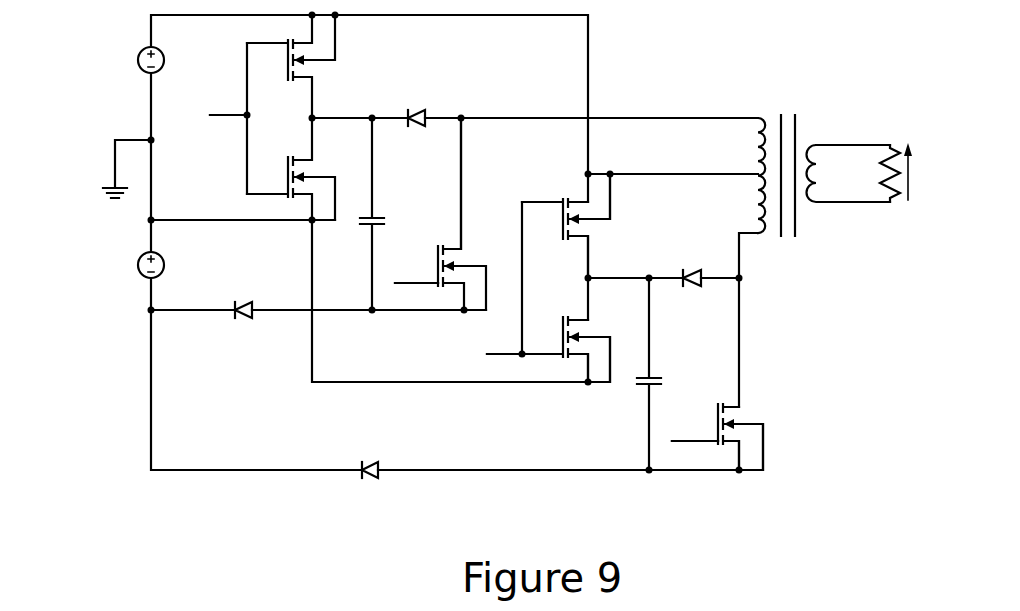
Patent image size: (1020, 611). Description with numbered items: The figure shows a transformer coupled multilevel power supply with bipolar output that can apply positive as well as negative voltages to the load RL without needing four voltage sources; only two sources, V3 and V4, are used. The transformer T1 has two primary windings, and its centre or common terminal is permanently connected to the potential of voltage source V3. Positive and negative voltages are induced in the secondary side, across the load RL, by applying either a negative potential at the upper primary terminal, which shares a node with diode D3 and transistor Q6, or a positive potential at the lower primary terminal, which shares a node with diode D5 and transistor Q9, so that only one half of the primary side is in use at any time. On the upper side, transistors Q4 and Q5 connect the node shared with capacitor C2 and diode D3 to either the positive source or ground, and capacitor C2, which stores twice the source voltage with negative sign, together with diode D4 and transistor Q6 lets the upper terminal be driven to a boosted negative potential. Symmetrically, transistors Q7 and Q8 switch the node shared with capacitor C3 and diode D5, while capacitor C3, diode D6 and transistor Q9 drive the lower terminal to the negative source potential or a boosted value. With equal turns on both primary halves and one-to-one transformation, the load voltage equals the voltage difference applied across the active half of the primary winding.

The voltage source V3 is at (142, 60).
The voltage source V4 is at (168, 257).
The transistor Q4 is at (291, 66).
The transistor Q5 is at (291, 169).
The transistor Q6 is at (448, 214).
The transistor Q7 is at (566, 226).
The transistor Q8 is at (566, 349).
The transistor Q9 is at (717, 437).
The diode D3 is at (417, 110).
The diode D4 is at (243, 302).
The diode D5 is at (692, 271).
The diode D6 is at (370, 461).
The capacitor C2 is at (378, 211).
The capacitor C3 is at (655, 370).
The transformer T1 is at (816, 166).
The load RL is at (881, 173).